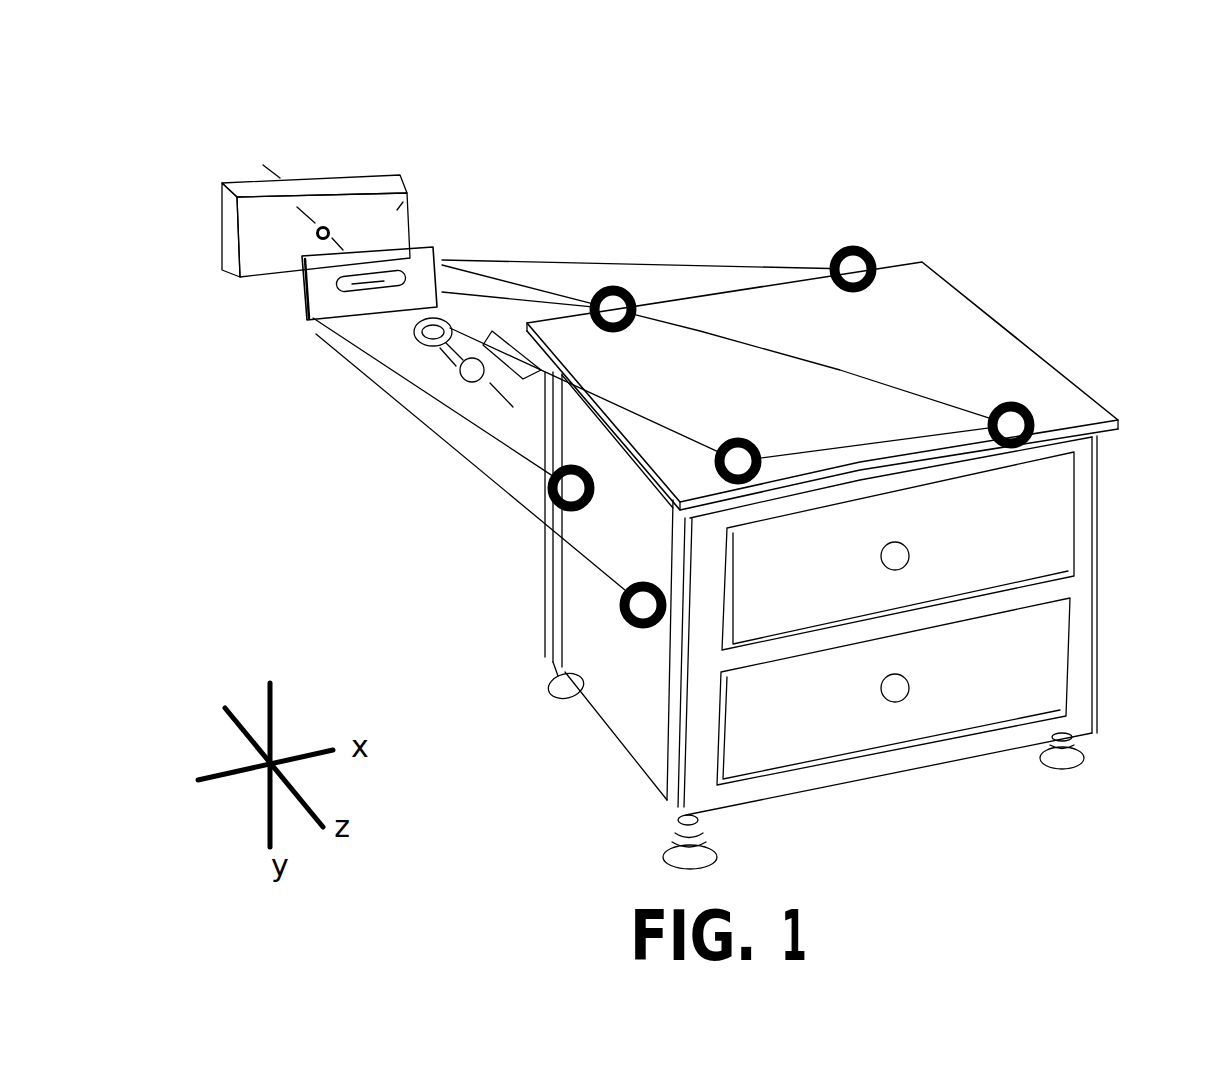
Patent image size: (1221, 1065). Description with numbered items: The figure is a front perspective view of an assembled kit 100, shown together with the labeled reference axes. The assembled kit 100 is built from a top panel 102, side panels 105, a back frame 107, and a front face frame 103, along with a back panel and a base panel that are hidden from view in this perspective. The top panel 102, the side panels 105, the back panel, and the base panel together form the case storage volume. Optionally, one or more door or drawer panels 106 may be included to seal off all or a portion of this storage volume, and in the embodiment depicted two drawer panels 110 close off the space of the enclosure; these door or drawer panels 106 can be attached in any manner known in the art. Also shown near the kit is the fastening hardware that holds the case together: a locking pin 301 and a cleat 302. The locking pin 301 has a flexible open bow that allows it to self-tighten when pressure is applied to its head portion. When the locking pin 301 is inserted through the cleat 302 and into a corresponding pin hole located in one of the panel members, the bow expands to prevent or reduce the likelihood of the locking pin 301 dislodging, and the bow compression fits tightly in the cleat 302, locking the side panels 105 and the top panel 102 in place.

The assembled kit 100 is at (721, 454).
The top panel 102 is at (935, 298).
The front face frame 103 is at (1002, 738).
The side panels 105 is at (636, 683).
The door or drawer panels 106 is at (1030, 495).
The back frame 107 is at (547, 547).
The drawer panels 110 is at (822, 740).
The locking pin 301 is at (435, 330).
The cleat 302 is at (313, 270).